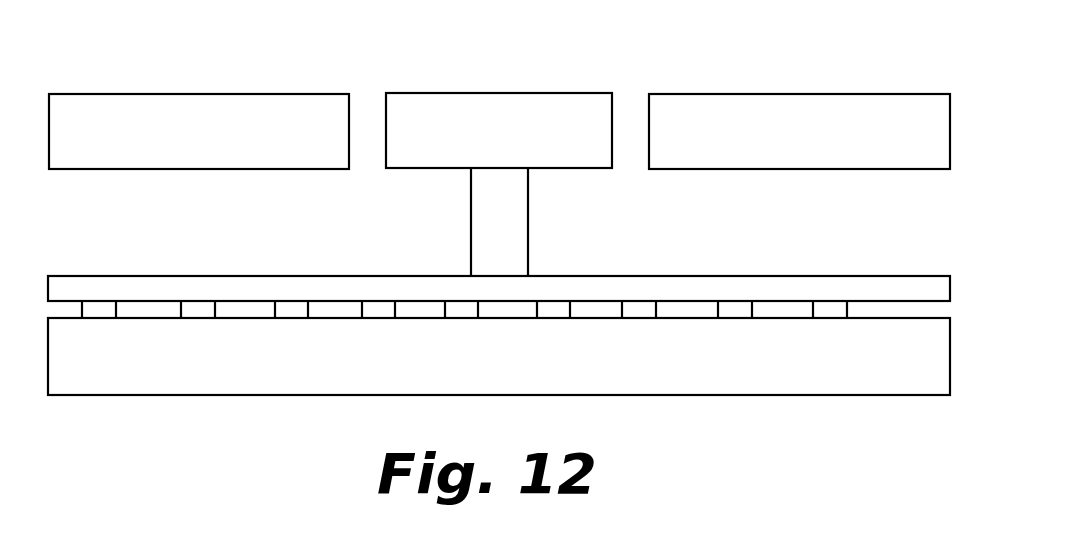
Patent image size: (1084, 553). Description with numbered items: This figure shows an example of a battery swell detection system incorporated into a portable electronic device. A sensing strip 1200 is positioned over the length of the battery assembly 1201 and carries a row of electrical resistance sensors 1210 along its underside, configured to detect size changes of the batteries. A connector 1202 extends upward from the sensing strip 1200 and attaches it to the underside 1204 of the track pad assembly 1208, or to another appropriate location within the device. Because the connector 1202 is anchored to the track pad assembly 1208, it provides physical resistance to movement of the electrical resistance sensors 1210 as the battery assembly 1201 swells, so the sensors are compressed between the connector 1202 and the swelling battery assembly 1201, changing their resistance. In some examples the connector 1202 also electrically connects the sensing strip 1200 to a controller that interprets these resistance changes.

The sensing strip 1200 is at (143, 287).
The battery assembly 1201 is at (105, 393).
The connector 1202 is at (488, 243).
The underside of the track pad assembly 1204 is at (417, 169).
The track pad assembly 1208 is at (433, 128).
The electrical resistance sensors 1210 is at (635, 305).